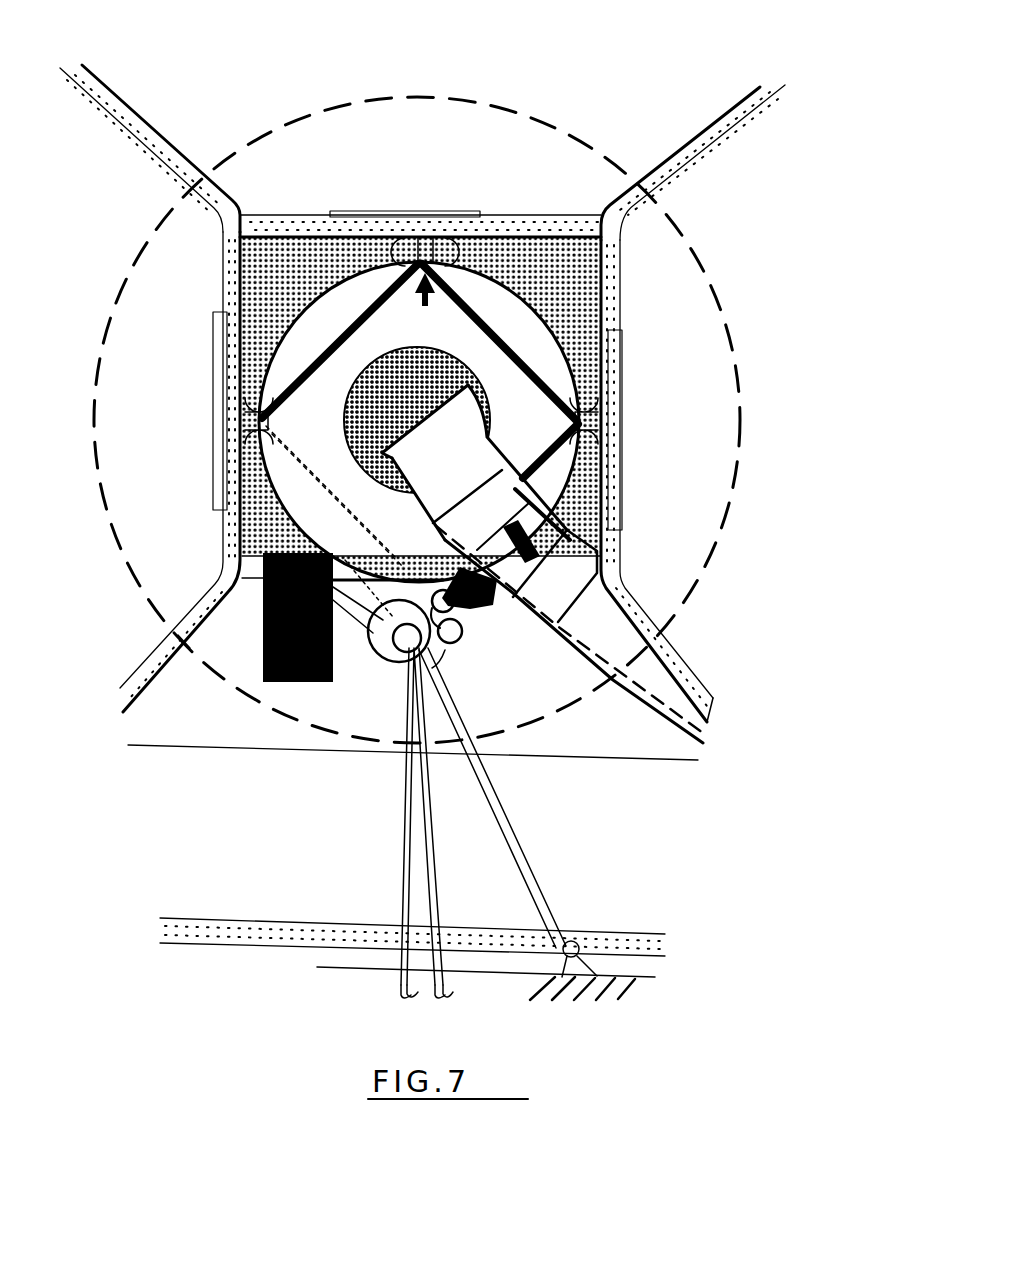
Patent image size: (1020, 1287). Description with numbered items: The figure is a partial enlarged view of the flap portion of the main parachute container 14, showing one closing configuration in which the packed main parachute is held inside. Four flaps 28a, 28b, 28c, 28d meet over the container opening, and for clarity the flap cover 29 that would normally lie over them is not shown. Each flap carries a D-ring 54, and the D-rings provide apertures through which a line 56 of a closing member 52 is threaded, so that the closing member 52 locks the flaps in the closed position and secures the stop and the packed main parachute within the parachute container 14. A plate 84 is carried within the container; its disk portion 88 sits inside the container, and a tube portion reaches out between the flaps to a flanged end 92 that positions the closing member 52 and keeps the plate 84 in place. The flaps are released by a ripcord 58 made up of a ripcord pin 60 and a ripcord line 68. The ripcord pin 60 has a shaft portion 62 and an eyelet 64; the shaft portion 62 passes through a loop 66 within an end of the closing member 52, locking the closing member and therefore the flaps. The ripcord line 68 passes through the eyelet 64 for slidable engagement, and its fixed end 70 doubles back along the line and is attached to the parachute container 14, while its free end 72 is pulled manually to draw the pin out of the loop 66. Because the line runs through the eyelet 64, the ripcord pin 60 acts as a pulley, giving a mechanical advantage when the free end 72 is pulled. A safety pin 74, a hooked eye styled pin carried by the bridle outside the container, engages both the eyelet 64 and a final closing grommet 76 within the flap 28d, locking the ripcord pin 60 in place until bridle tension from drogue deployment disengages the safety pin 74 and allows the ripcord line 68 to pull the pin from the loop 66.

The parachute container 14 is at (633, 975).
The flap 28a is at (185, 428).
The flap 28b is at (432, 172).
The flap 28c is at (730, 428).
The flap 28d is at (552, 711).
The flap cover 29 is at (160, 930).
The closing member 52 is at (497, 313).
The D-rings 54 is at (472, 260).
The line 56 is at (650, 478).
The ripcord 58 is at (528, 828).
The ripcord pin 60 is at (360, 623).
The shaft portion 62 is at (263, 638).
The eyelet 64 is at (433, 657).
The loop 66 is at (385, 638).
The ripcord line 68 is at (533, 872).
The fixed end 70 is at (577, 944).
The free end 72 is at (395, 895).
The safety pin 74 is at (443, 645).
The final closing grommet 76 is at (410, 598).
The plate 84 is at (540, 350).
The disk portion 88 is at (518, 104).
The flanged end 92 is at (330, 437).